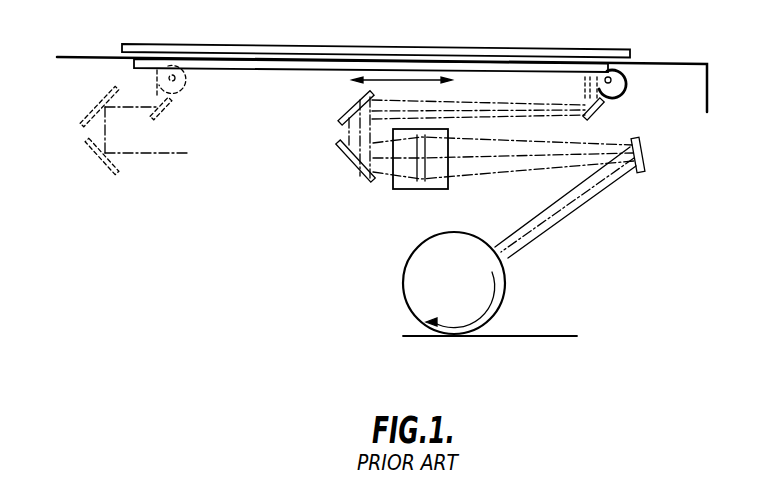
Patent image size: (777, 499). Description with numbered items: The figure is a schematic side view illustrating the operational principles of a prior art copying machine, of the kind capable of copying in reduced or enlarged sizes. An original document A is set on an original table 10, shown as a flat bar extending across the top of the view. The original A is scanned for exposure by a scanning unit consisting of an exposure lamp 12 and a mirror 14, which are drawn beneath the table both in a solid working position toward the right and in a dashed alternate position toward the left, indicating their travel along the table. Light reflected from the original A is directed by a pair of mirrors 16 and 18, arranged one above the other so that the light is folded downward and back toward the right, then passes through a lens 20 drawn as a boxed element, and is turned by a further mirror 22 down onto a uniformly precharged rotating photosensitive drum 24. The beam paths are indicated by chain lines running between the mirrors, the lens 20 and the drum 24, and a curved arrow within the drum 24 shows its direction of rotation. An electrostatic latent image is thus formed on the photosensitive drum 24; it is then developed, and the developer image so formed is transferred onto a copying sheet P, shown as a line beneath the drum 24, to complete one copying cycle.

The original document A is at (293, 45).
The original table 10 is at (276, 69).
The exposure lamp 12 is at (616, 74).
The mirror 14 is at (603, 113).
The mirror 16 is at (352, 102).
The mirror 18 is at (345, 165).
The lens 20 is at (409, 190).
The mirror 22 is at (645, 155).
The photosensitive drum 24 is at (505, 283).
The copying sheet P is at (543, 338).